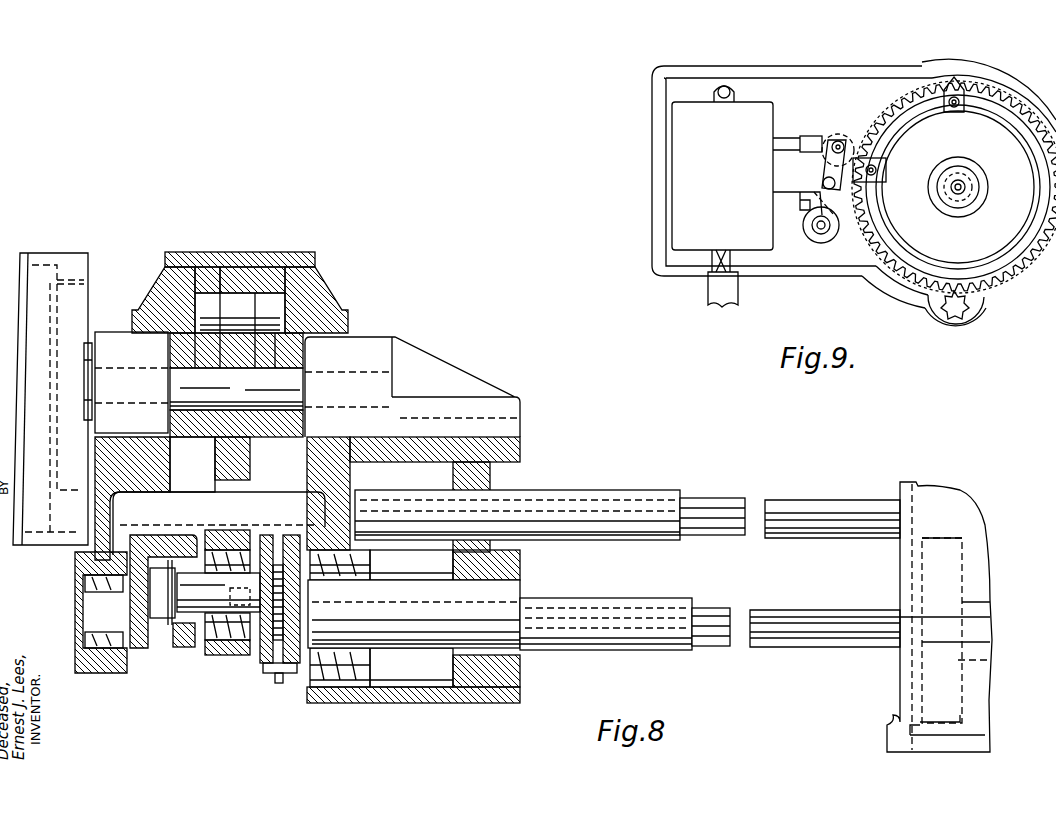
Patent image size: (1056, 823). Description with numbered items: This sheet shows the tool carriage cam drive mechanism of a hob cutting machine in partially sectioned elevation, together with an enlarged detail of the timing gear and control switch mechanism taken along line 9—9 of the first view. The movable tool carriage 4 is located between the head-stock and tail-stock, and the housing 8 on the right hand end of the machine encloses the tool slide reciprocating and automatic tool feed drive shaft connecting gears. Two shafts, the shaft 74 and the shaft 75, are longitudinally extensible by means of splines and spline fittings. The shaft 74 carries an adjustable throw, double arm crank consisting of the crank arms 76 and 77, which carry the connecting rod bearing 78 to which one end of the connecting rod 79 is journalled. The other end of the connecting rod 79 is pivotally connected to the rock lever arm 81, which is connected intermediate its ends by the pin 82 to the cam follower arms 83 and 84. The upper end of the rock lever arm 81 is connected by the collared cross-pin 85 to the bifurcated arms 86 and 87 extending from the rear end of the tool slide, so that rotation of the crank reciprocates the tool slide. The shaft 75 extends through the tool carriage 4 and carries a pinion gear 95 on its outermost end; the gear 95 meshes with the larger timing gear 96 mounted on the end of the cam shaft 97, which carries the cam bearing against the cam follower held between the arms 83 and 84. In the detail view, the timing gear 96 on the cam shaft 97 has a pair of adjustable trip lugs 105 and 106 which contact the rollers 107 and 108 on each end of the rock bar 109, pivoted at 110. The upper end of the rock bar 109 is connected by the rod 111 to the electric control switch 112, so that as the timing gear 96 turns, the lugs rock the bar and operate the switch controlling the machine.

In FIG. 8, the tool carriage 4 is at (368, 345).
In FIG. 8, the housing 8 is at (985, 547).
In FIG. 8, the section line 9— 9 is at (26, 243).
In FIG. 8, the shaft 74 is at (812, 612).
In FIG. 8, the shaft 75 is at (828, 505).
In FIG. 8, the crank arm 76 is at (262, 655).
In FIG. 8, the crank arm 77 is at (150, 600).
In FIG. 8, the connecting rod bearing 78 is at (207, 600).
In FIG. 8, the connecting rod 79 is at (240, 540).
In FIG. 8, the rock lever arm 81 is at (245, 458).
In FIG. 8, the pin 82 is at (236, 371).
In FIG. 8, the cam follower arm 83 is at (300, 333).
In FIG. 8, the cam follower arm 84 is at (186, 425).
In FIG. 8, the collared cross-pin 85 is at (240, 313).
In FIG. 8, the bifurcated arm 86 is at (268, 272).
In FIG. 8, the bifurcated arm 87 is at (205, 272).
In FIG. 8, the pinion gear 95 is at (68, 525).
In FIG. 9, the pinion gear 95 is at (962, 306).
In FIG. 8, the timing gear 96 is at (80, 285).
In FIG. 9, the timing gear 96 is at (1000, 88).
In FIG. 8, the cam shaft 97 is at (372, 374).
In FIG. 9, the cam shaft 97 is at (968, 182).
In FIG. 9, the trip lug 105 is at (971, 110).
In FIG. 9, the trip lug 106 is at (886, 166).
In FIG. 9, the roller 107 is at (825, 240).
In FIG. 9, the roller 108 is at (840, 130).
In FIG. 9, the rock bar 109 is at (822, 160).
In FIG. 9, the pivot 110 is at (822, 183).
In FIG. 9, the rod 111 is at (788, 133).
In FIG. 9, the electric control switch 112 is at (684, 175).